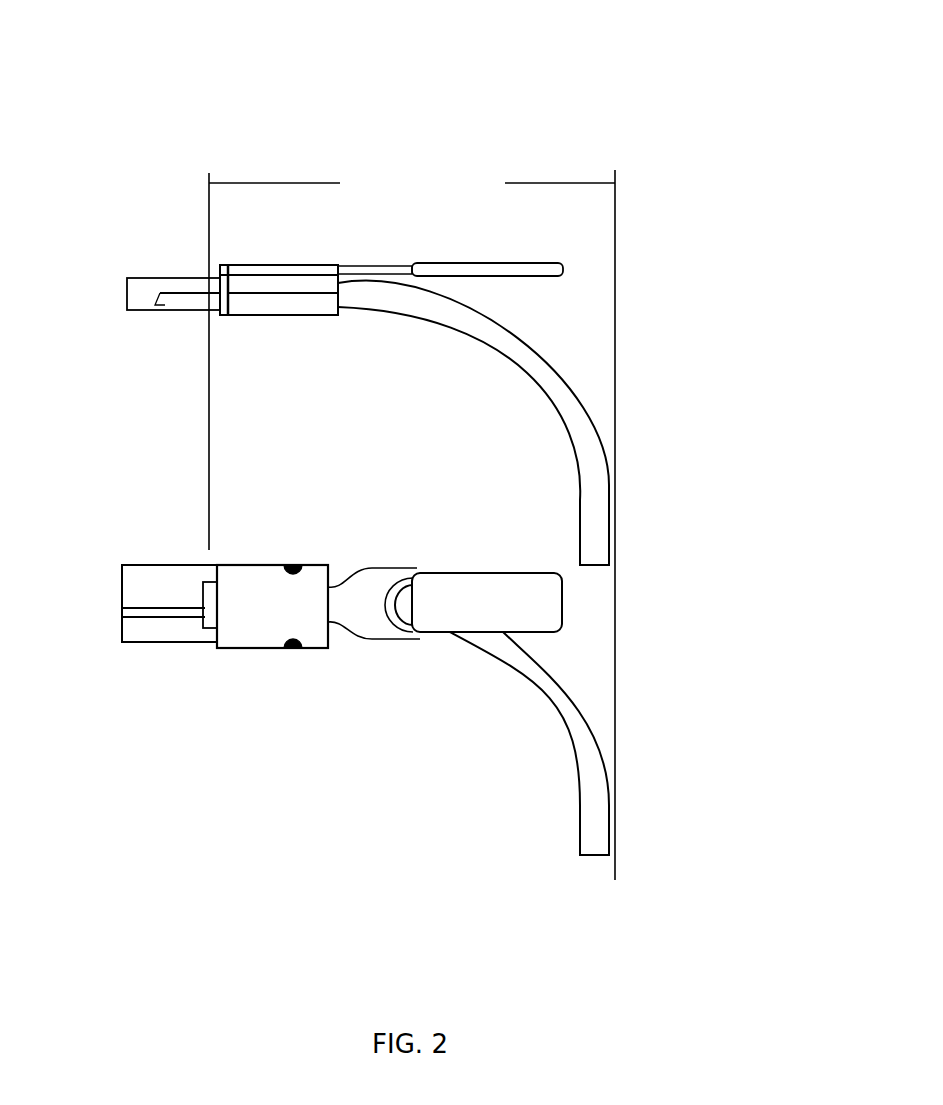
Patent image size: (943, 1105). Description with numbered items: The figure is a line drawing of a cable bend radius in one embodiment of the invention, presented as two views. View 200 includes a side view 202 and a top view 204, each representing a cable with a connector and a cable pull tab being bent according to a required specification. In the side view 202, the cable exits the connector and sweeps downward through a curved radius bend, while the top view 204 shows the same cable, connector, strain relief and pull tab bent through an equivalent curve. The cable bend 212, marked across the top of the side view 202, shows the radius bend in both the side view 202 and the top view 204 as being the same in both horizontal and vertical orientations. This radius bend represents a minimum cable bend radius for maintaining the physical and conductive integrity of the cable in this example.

The view 200 is at (380, 41).
The side view 202 is at (725, 265).
The top view 204 is at (707, 726).
The cable bend 212 is at (438, 213).